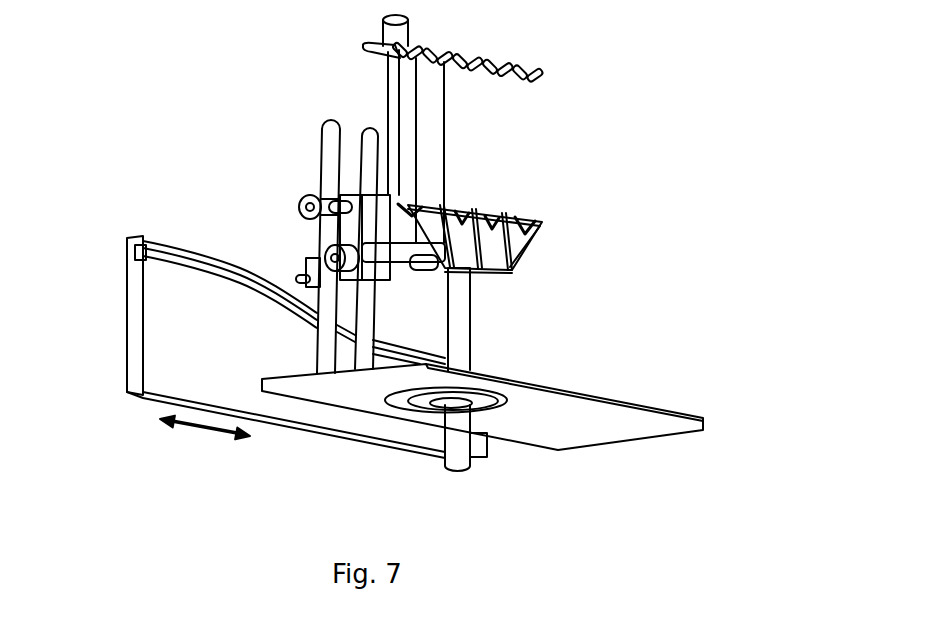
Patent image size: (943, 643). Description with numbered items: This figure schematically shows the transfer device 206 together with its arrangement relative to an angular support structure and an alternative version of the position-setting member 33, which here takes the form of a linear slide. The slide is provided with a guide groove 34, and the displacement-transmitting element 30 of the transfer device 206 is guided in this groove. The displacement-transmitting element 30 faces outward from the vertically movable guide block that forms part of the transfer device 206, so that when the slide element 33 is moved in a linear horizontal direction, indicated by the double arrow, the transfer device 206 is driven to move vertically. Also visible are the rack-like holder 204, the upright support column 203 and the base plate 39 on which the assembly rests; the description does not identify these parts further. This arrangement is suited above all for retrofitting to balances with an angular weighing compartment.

The transfer device 206 is at (243, 180).
The displacement-transmitting element 30 is at (293, 275).
The guide groove 34 is at (96, 260).
The position-setting member 33 is at (246, 347).
The cartridge holder rack 204 is at (597, 218).
The support column 203 is at (620, 359).
The base plate 39 is at (524, 391).